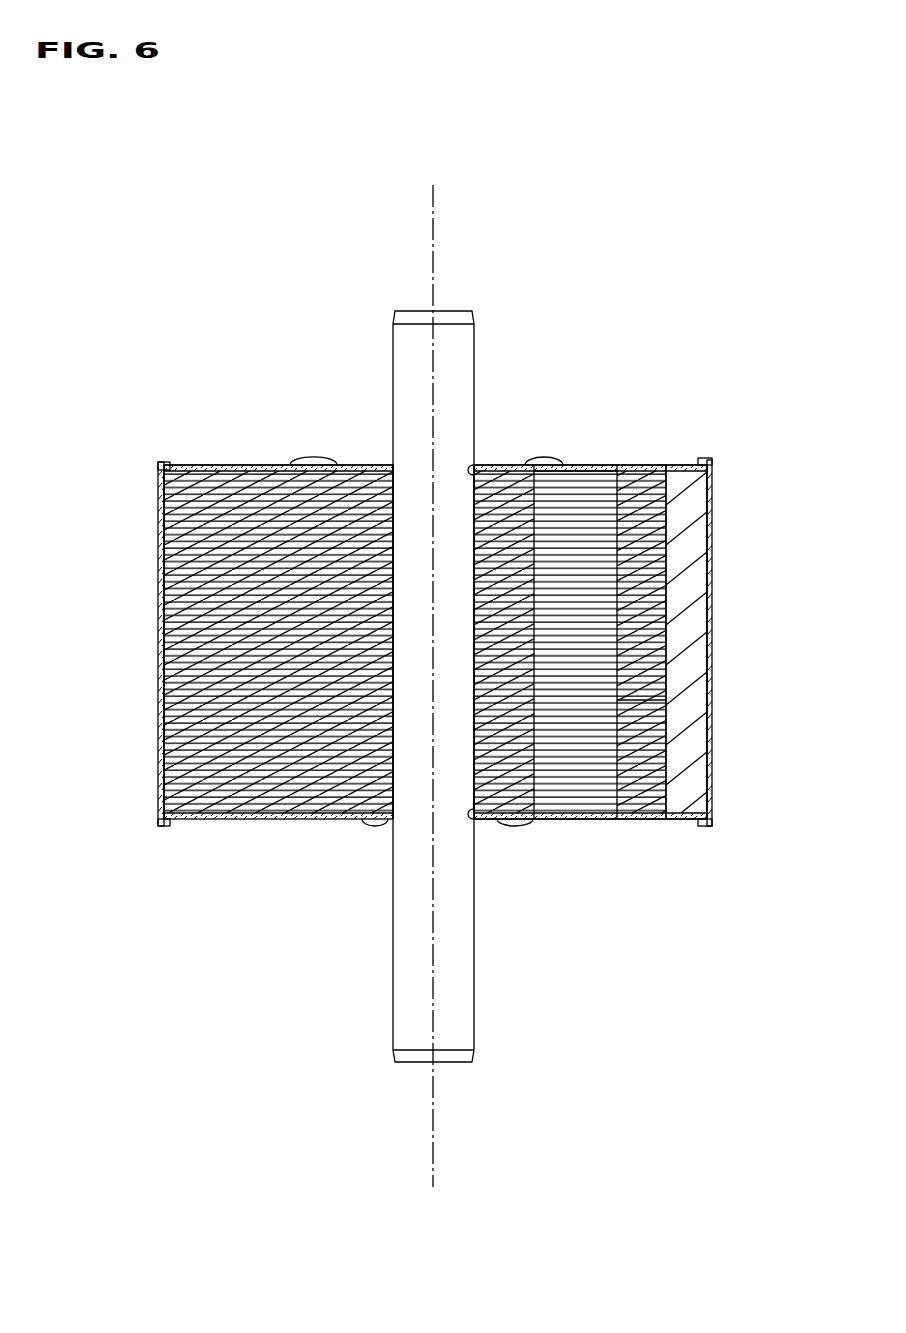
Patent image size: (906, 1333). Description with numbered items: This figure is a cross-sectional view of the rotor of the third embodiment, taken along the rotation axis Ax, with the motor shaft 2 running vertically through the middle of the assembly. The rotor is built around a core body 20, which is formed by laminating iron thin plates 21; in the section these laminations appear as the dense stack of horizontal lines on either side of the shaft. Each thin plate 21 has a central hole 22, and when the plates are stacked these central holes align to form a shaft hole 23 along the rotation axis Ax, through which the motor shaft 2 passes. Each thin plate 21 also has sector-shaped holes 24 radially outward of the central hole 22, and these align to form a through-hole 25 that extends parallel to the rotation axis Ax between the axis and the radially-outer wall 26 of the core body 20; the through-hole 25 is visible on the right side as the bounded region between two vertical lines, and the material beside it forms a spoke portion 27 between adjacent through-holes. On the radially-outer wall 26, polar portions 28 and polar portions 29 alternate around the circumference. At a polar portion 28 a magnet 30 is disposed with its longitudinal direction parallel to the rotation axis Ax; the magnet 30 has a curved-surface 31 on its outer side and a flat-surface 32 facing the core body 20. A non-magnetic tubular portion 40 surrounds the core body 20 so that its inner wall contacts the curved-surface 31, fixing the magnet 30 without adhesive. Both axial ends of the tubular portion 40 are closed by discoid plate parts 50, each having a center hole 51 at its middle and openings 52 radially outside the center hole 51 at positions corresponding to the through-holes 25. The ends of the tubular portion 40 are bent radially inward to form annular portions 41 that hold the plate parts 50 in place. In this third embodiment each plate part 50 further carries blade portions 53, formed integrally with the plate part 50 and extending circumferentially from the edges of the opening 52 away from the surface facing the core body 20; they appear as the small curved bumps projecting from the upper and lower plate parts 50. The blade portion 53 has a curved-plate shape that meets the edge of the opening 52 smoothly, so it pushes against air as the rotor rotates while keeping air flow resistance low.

The rotation axis Ax is at (433, 213).
The motor shaft 2 is at (474, 340).
The core body 20 is at (263, 464).
The thin plate 21 is at (345, 464).
The central hole 22 is at (395, 470).
The shaft hole 23 is at (458, 505).
The sector-shaped hole 24 is at (550, 464).
The through-hole 25 is at (617, 510).
The radially-outer wall 26 is at (160, 528).
The spoke portion 27 is at (306, 805).
The polar portion 28 is at (712, 580).
The polar portion 29 is at (160, 583).
The magnet 30 is at (698, 638).
The curved-surface 31 is at (712, 667).
The flat-surface 32 is at (666, 700).
The tubular portion 40 is at (160, 647).
The annular portion 41 is at (705, 459).
The plate part 50 is at (240, 464).
The center hole 51 is at (472, 462).
The opening 52 is at (571, 464).
The blade portion 53 is at (313, 458).